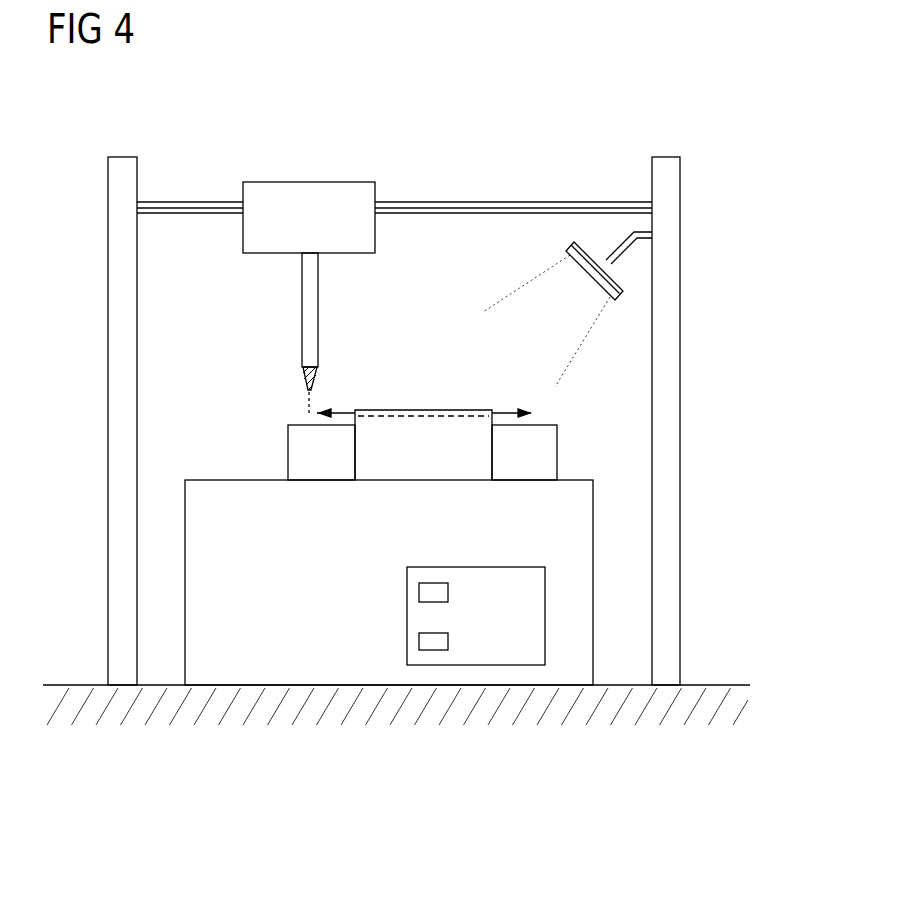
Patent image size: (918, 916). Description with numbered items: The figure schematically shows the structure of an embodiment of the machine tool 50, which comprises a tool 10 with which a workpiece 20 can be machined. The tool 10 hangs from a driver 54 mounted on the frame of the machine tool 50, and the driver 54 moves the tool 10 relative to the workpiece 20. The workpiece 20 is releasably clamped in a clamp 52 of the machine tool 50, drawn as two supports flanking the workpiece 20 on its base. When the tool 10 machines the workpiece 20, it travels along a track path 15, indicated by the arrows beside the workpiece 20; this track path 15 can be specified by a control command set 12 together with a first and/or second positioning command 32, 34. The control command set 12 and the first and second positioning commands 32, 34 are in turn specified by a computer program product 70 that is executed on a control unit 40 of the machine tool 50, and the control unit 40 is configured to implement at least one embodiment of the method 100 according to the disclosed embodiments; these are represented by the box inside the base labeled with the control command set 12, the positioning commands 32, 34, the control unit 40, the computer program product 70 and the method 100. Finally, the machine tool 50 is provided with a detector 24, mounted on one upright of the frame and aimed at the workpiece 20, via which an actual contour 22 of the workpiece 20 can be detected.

The machine tool 50 is at (588, 128).
The driver 54 is at (305, 182).
The tool 10 is at (304, 378).
The track path 15 is at (380, 410).
The workpiece 20 is at (434, 371).
The actual contour 22 is at (471, 410).
The detector 24 is at (614, 279).
The clamp 52 is at (301, 450).
The control command set 12 is at (461, 680).
The first positioning command 32 is at (461, 680).
The second positioning command 34 is at (461, 680).
The control unit 40 is at (461, 680).
The computer program product 70 is at (461, 680).
The method 100 is at (477, 648).